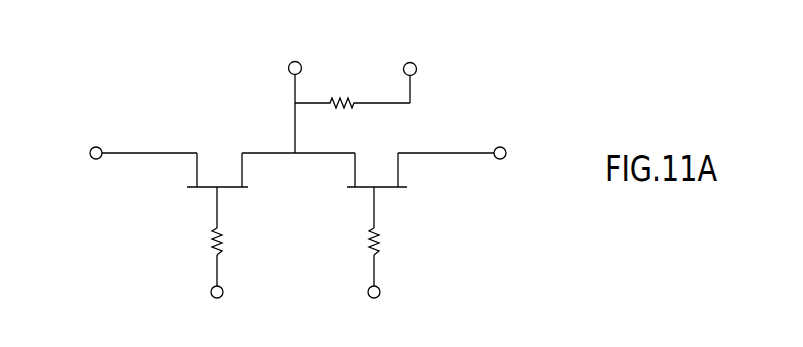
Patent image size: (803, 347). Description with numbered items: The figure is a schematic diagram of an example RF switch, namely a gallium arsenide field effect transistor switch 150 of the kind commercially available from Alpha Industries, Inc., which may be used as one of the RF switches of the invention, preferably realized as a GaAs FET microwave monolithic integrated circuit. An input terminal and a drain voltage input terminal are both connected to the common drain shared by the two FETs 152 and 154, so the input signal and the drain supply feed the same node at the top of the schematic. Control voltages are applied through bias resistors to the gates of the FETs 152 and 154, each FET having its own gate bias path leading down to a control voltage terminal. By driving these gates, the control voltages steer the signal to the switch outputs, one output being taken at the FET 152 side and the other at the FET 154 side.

The FET switch 150 is at (143, 80).
The FET 152 is at (223, 168).
The FET 154 is at (372, 170).